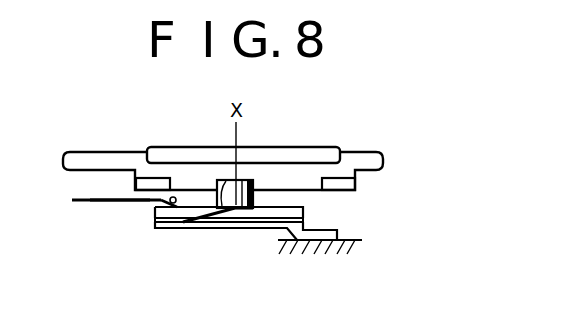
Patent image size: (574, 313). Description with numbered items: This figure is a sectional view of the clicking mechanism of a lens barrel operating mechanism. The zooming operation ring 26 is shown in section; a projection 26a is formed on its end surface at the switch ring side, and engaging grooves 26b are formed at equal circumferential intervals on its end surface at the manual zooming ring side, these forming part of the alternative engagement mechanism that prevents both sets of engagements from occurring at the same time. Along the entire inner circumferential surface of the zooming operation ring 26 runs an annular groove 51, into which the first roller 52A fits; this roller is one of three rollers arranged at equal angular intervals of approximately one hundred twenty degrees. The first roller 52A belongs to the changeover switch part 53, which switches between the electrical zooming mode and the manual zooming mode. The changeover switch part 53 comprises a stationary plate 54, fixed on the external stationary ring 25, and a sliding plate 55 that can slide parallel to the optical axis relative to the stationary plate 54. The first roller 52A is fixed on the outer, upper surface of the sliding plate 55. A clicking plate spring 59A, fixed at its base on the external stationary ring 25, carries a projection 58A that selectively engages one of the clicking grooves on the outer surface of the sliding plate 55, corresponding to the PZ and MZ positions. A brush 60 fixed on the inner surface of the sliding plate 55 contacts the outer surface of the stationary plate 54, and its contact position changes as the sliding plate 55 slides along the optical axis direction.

The zooming operation ring 26 is at (98, 158).
The projection 26a is at (136, 185).
The engaging grooves 26b is at (347, 190).
The first roller 52A is at (242, 185).
The changeover switch part 53 is at (78, 220).
The clicking plate spring 59A is at (110, 202).
The projection 58A is at (171, 207).
The brush 60 is at (185, 223).
The annular groove 51 is at (222, 210).
The sliding plate 55 is at (262, 213).
The stationary plate 54 is at (286, 232).
The external stationary ring 25 is at (337, 240).